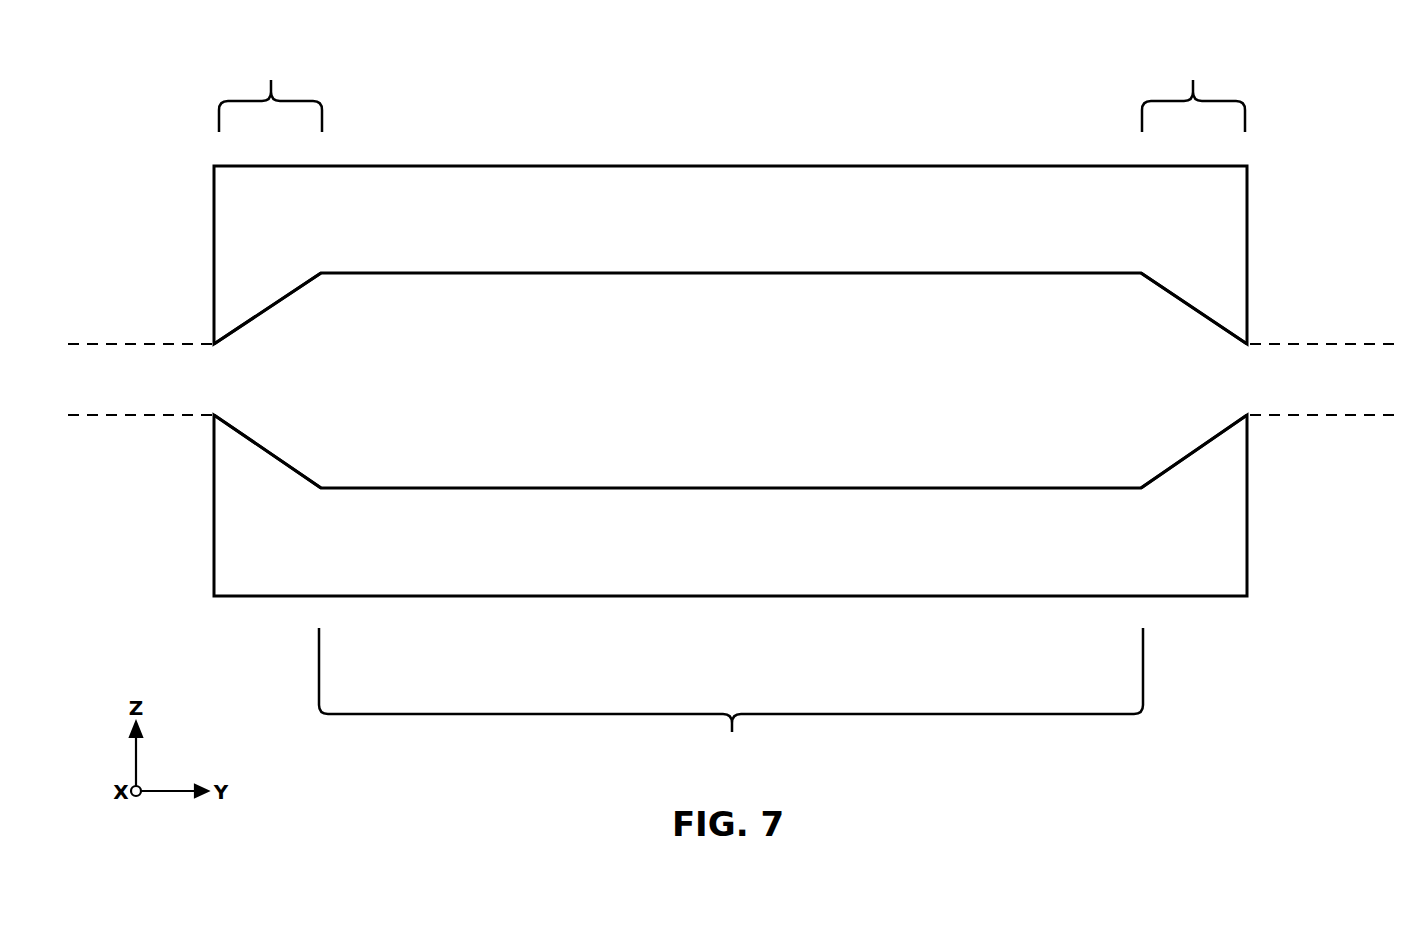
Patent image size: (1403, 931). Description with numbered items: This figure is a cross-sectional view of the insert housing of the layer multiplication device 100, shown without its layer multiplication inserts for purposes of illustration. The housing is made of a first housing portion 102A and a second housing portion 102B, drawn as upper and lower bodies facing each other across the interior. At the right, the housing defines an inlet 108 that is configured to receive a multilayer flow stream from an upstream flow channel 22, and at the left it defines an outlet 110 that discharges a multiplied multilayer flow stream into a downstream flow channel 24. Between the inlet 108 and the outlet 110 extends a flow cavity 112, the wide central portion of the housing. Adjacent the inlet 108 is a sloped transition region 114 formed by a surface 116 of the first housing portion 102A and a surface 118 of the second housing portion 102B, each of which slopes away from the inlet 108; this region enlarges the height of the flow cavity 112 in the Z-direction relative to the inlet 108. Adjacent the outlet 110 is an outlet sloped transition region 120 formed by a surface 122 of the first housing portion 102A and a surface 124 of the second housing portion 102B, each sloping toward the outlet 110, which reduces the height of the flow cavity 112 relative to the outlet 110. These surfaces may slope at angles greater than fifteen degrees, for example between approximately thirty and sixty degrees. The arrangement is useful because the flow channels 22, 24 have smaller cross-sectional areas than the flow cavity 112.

The layer multiplication device 100 is at (800, 321).
The first housing portion 102A is at (1247, 233).
The second housing portion 102B is at (1247, 523).
The inlet 108 is at (1276, 336).
The outlet 110 is at (180, 323).
The flow cavity 112 is at (731, 697).
The sloped transition region 114 is at (1193, 89).
The surface 116 is at (1182, 303).
The surface 118 is at (1203, 450).
The outlet sloped transition region 120 is at (270, 89).
The surface 122 is at (260, 315).
The surface 124 is at (267, 452).
The flow channel 22 is at (1325, 415).
The flow channel 24 is at (87, 415).